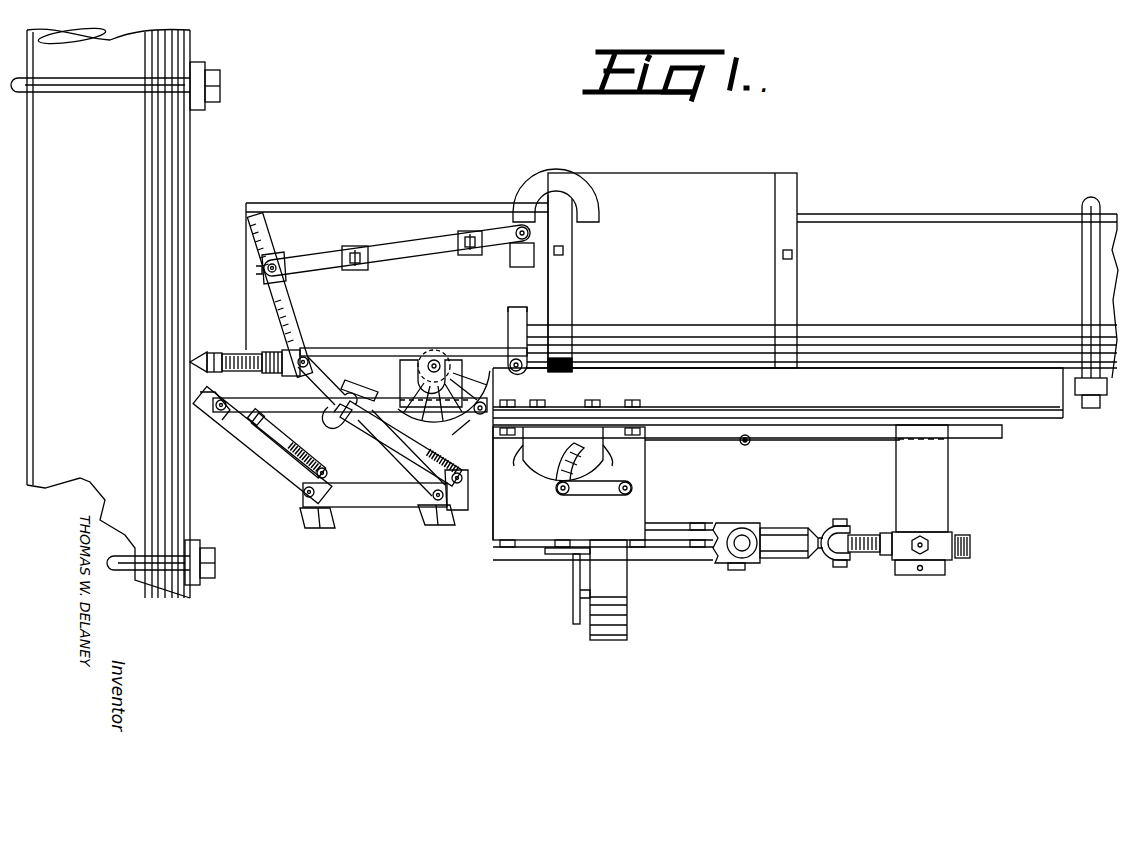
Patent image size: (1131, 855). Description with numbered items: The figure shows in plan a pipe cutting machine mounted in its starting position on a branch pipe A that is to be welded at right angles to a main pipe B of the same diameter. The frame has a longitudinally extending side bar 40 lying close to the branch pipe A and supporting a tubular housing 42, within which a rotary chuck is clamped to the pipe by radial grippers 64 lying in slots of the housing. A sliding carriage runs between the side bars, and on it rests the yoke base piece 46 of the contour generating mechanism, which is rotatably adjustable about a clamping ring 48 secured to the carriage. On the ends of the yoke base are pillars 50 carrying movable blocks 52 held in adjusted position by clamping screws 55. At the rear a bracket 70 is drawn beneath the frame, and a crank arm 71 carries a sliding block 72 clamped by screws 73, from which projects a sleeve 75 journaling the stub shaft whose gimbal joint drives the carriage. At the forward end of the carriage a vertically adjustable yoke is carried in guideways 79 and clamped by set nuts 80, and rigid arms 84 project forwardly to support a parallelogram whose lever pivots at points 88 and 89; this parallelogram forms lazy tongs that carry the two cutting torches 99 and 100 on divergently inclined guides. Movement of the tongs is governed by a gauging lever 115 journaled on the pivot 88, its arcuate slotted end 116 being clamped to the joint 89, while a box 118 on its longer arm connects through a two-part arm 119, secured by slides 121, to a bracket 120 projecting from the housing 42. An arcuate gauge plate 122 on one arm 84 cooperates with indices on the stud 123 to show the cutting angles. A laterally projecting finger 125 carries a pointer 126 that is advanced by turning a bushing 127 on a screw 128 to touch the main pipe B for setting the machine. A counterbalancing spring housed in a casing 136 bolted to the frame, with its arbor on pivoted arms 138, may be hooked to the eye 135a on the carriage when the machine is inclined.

The branch pipe A is at (952, 230).
The main pipe B is at (190, 160).
The side bar 40 is at (778, 454).
The tubular housing 42 is at (672, 270).
The yoke base piece 46 is at (988, 445).
The clamping ring 48 is at (798, 440).
The pillar 50 is at (940, 492).
The movable block 52 is at (945, 538).
The clamping screw 55 is at (917, 552).
The radial gripper 64 is at (783, 254).
The bracket 70 is at (573, 578).
The crank arm 71 is at (713, 545).
The block 72 is at (738, 525).
The screw 73 is at (738, 572).
The sleeve 75 is at (781, 530).
The guideway 79 is at (508, 312).
The set nut 80 is at (508, 360).
The rigid arm 84 is at (388, 358).
The pivot point 88 is at (330, 372).
The pivot point 89 is at (352, 417).
The torch 99 is at (354, 376).
The torch 100 is at (246, 460).
The lever 115 is at (262, 218).
The arcuate slotted end 116 is at (330, 423).
The box 118 is at (258, 268).
The arm or rod 119 is at (322, 258).
The bracket 120 is at (526, 196).
The slide or box 121 is at (368, 268).
The arcuate gauge plate 122 is at (408, 365).
The stud 123 is at (470, 420).
The finger 125 is at (213, 372).
The pointer 126 is at (195, 378).
The bushing 127 is at (270, 374).
The screw 128 is at (235, 355).
The eye 135a is at (744, 446).
The casing 136 is at (569, 483).
The pivoted arm 138 is at (602, 492).